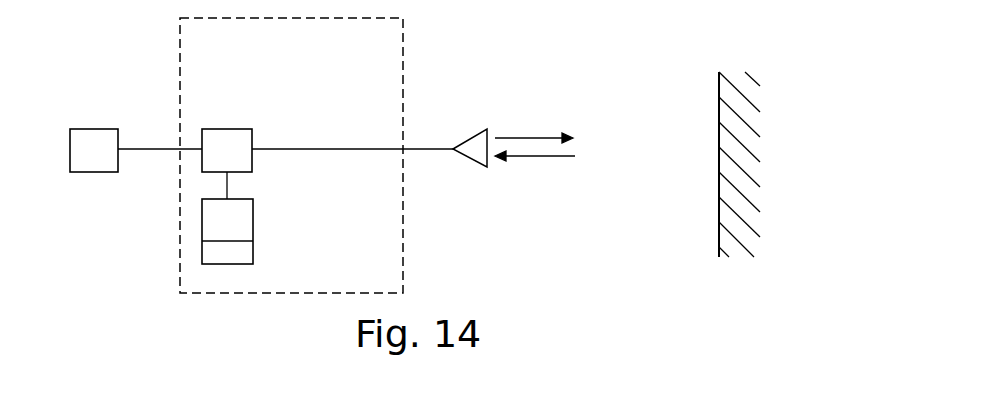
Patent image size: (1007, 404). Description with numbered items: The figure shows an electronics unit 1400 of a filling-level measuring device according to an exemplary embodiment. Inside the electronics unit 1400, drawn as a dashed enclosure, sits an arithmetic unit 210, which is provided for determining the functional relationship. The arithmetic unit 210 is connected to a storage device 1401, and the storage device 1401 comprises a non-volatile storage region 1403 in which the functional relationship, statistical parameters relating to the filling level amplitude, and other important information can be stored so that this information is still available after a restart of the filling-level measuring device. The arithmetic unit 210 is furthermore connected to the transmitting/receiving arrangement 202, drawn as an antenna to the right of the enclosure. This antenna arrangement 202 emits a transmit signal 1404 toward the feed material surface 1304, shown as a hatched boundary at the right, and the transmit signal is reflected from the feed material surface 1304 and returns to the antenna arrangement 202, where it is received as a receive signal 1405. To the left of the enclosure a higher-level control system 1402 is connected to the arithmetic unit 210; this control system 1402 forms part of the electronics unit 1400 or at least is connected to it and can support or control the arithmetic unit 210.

The electronics unit 1400 is at (156, 62).
The higher-level control system 1402 is at (93, 165).
The arithmetic unit 210 is at (226, 135).
The storage device 1401 is at (253, 221).
The non-volatile storage region 1403 is at (247, 254).
The transmitting/receiving arrangement 202 is at (463, 140).
The transmitted signal 1404 is at (535, 138).
The receive signal 1405 is at (535, 158).
The feed material surface 1304 is at (719, 197).